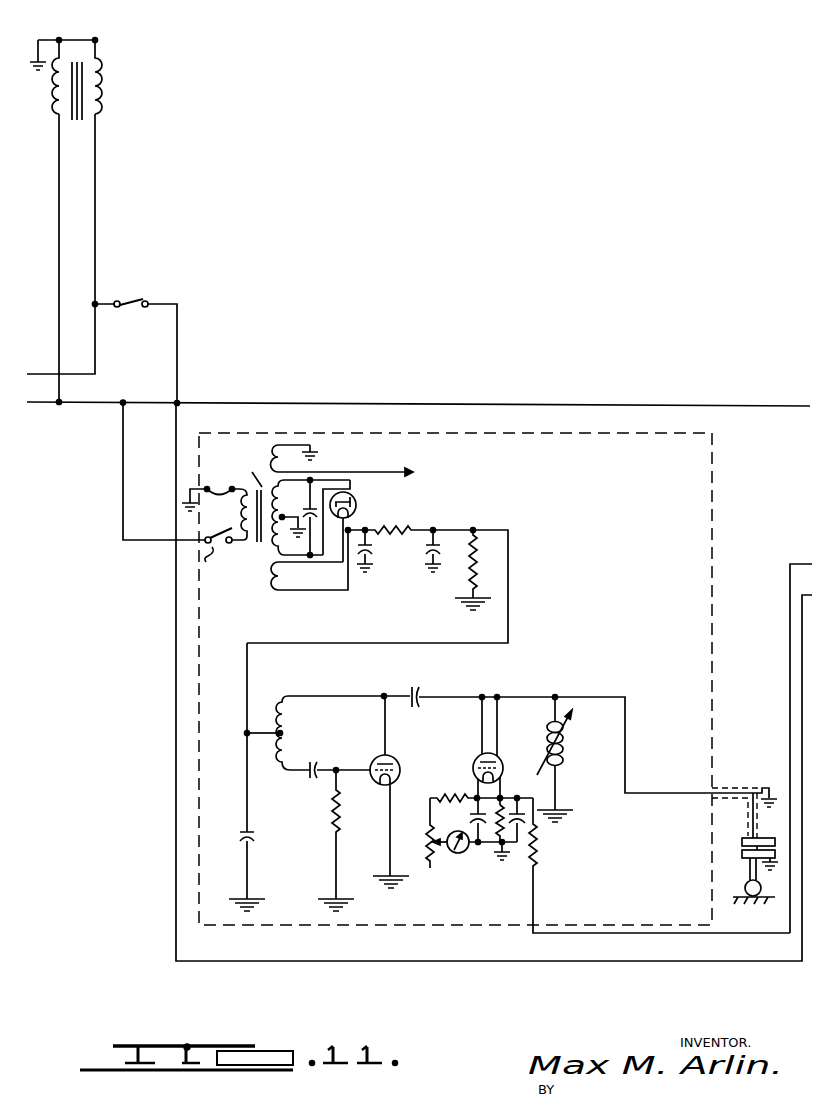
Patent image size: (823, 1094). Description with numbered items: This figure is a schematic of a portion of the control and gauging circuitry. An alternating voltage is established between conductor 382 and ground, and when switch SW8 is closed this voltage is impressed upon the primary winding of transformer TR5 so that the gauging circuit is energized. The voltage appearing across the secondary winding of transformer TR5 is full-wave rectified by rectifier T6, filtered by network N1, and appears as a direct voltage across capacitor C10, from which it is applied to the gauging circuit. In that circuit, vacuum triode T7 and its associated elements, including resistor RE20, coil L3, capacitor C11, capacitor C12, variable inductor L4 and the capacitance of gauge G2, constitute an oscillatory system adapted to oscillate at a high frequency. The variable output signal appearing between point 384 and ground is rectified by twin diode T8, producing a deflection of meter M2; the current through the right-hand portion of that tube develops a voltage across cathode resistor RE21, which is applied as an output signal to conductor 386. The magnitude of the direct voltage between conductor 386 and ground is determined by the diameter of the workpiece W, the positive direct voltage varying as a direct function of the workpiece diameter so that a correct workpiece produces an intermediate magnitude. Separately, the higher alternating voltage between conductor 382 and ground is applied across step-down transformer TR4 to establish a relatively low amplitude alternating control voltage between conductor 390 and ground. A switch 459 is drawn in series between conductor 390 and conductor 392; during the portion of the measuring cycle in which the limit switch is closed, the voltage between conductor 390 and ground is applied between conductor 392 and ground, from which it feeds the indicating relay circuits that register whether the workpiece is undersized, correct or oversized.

The step-down transformer TR4 is at (73, 62).
The conductor 390 is at (95, 229).
The switch 459 is at (128, 301).
The conductor 382 is at (92, 404).
The conductor 392 is at (318, 961).
The switch SW8 is at (185, 490).
The transformer TR5 is at (297, 517).
The rectifier T6 is at (356, 503).
The network N1 is at (466, 520).
The capacitor C10 is at (251, 836).
The coil L3 is at (264, 710).
The capacitor C11 is at (312, 763).
The resistor RE20 is at (333, 820).
The vacuum triode T7 is at (400, 767).
The capacitor C12 is at (418, 689).
The point 384 is at (485, 696).
The twin diode T8 is at (499, 760).
The variable inductor L4 is at (565, 750).
The meter M2 is at (454, 855).
The cathode resistor RE21 is at (498, 828).
The conductor 386 is at (536, 888).
The gauge G2 is at (736, 843).
The workpiece W is at (746, 891).